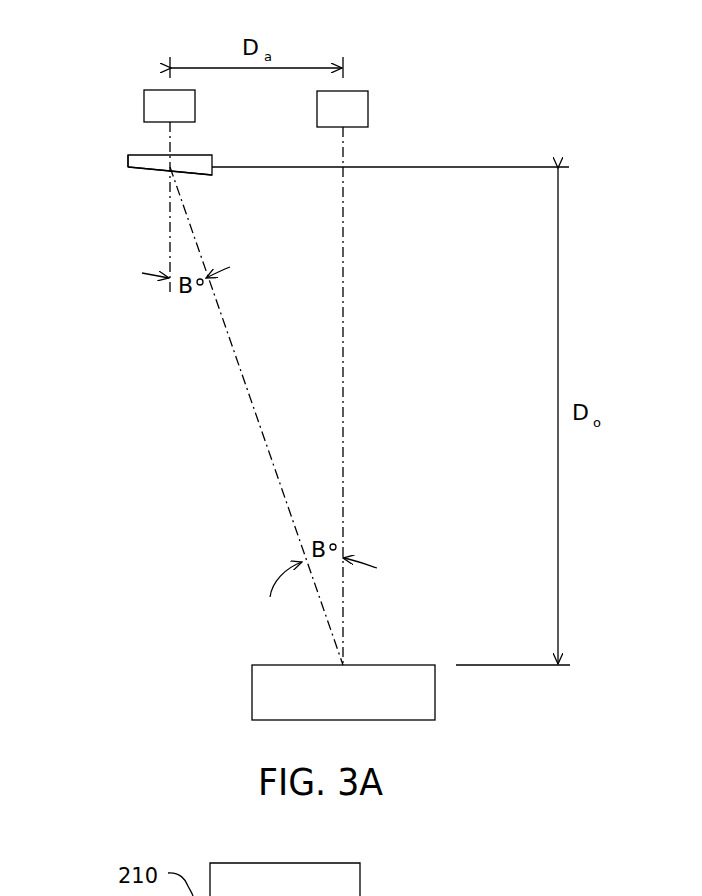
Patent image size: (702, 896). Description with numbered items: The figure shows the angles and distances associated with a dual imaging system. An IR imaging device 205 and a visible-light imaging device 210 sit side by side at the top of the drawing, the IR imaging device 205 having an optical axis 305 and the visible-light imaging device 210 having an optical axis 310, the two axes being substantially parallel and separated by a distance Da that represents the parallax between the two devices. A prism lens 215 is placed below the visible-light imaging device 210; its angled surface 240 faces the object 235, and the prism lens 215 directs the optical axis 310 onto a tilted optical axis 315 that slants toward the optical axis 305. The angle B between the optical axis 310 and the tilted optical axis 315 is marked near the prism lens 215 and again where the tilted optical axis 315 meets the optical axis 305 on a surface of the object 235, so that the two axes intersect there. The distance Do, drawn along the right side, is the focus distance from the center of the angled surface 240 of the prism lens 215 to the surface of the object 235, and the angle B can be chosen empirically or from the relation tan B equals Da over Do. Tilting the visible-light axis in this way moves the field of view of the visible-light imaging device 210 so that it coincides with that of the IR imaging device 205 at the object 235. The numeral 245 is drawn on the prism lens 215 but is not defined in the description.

The visible-light imaging device 210 is at (152, 89).
The IR imaging device 205 is at (360, 91).
The prism lens 215 is at (212, 163).
The first side of optical element 245 is at (130, 154).
The angled surface 240 is at (138, 168).
The optical axis 310 is at (168, 263).
The optical axis 305 is at (343, 318).
The tilted optical axis 315 is at (243, 383).
The object 235 is at (435, 690).